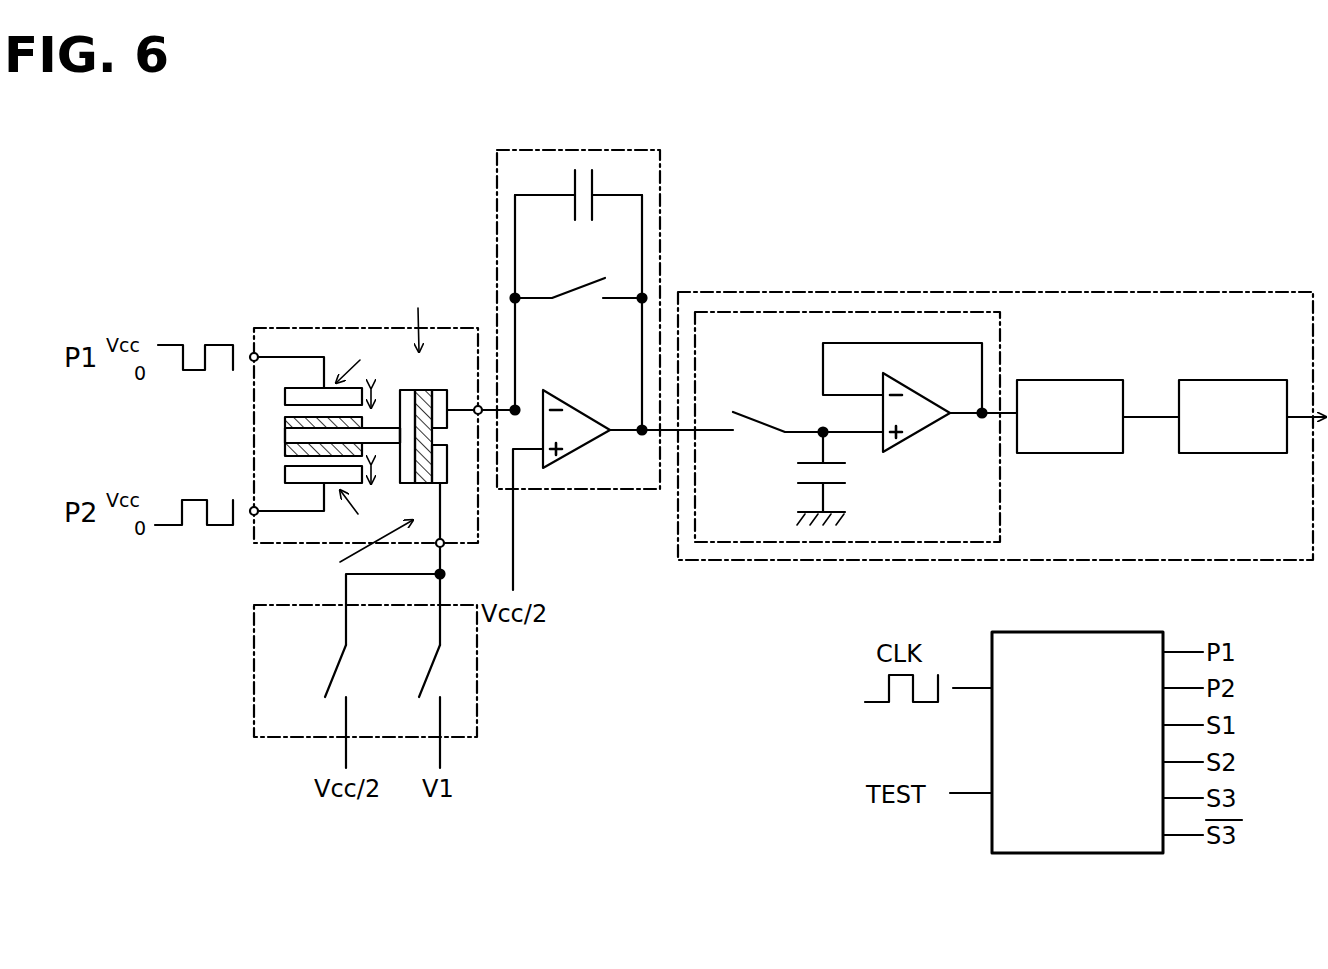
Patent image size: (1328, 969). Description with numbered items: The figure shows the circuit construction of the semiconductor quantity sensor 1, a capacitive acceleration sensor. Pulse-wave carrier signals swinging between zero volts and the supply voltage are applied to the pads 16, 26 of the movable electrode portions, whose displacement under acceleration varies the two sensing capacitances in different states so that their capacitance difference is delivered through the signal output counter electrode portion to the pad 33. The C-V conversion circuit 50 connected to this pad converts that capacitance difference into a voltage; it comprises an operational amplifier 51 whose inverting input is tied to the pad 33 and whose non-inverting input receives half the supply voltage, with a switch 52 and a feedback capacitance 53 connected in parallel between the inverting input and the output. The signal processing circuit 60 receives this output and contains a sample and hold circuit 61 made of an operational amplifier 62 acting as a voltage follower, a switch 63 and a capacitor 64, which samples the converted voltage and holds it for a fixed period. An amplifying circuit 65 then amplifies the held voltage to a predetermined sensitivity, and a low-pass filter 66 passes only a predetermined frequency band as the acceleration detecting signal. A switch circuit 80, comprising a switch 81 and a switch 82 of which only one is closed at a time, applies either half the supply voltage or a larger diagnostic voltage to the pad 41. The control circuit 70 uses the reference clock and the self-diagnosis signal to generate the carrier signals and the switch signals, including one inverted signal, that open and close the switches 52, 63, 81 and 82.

The semiconductor quantity sensor 1 is at (308, 328).
The pad 16 is at (252, 352).
The pad 26 is at (252, 516).
The pad 33 is at (477, 404).
The pad 41 is at (445, 547).
The C-V conversion circuit 50 is at (575, 150).
The operational amplifier 51 is at (573, 406).
The switch 52 is at (578, 284).
The feedback capacitance 53 is at (597, 208).
The signal processing circuit 60 is at (1045, 292).
The sample and hold circuit 61 is at (1000, 500).
The operational amplifier 62 is at (922, 402).
The switch 63 is at (758, 418).
The capacitor 64 is at (808, 457).
The amplifying circuit 65 is at (1069, 380).
The low-pass filter 66 is at (1230, 380).
The control circuit 70 is at (1076, 632).
The switch circuit 80 is at (477, 675).
The switch 81 is at (338, 664).
The switch 82 is at (432, 664).